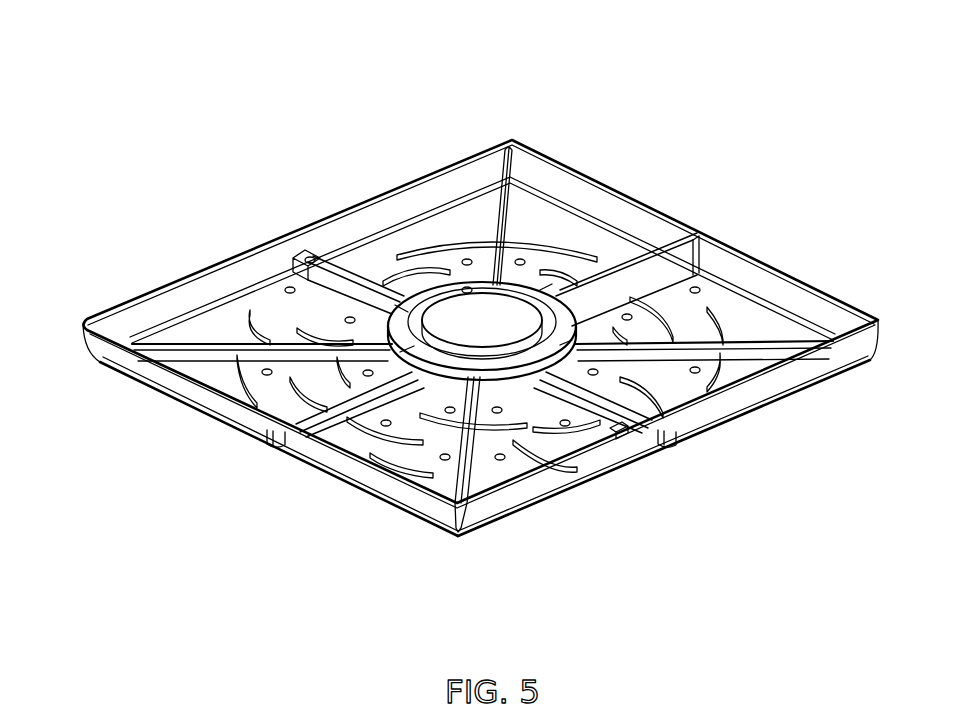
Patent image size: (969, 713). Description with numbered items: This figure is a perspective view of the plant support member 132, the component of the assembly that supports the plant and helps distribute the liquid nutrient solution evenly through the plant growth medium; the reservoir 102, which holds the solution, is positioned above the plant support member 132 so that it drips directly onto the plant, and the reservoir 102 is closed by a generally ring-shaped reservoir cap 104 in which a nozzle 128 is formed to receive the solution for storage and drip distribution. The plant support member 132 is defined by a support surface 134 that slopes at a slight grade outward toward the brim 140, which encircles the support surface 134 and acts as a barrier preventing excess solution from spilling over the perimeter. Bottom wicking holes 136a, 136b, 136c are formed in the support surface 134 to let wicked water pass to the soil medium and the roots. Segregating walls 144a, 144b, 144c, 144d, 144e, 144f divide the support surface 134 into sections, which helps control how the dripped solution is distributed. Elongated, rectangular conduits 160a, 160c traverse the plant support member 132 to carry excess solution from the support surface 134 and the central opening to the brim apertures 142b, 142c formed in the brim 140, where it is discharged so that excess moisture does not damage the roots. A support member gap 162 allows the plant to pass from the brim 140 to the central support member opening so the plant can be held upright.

The reservoir 102 is at (464, 537).
The reservoir cap 104 is at (480, 258).
The nozzle 128 is at (392, 300).
The plant support member 132 is at (96, 251).
The support surface 134 is at (560, 240).
The bottom wicking hole 136a is at (700, 292).
The bottom wicking hole 136b is at (548, 213).
The bottom wicking hole 136c is at (203, 268).
The brim 140 is at (352, 548).
The brim aperture 142b is at (272, 447).
The brim aperture 142c is at (672, 449).
The segregating wall 144a is at (200, 305).
The segregating wall 144b is at (200, 338).
The segregating wall 144c is at (392, 462).
The segregating wall 144d is at (583, 402).
The segregating wall 144e is at (800, 344).
The segregating wall 144f is at (507, 143).
The conduit 160a is at (275, 230).
The conduit 160c is at (622, 437).
The support member gap 162 is at (697, 232).